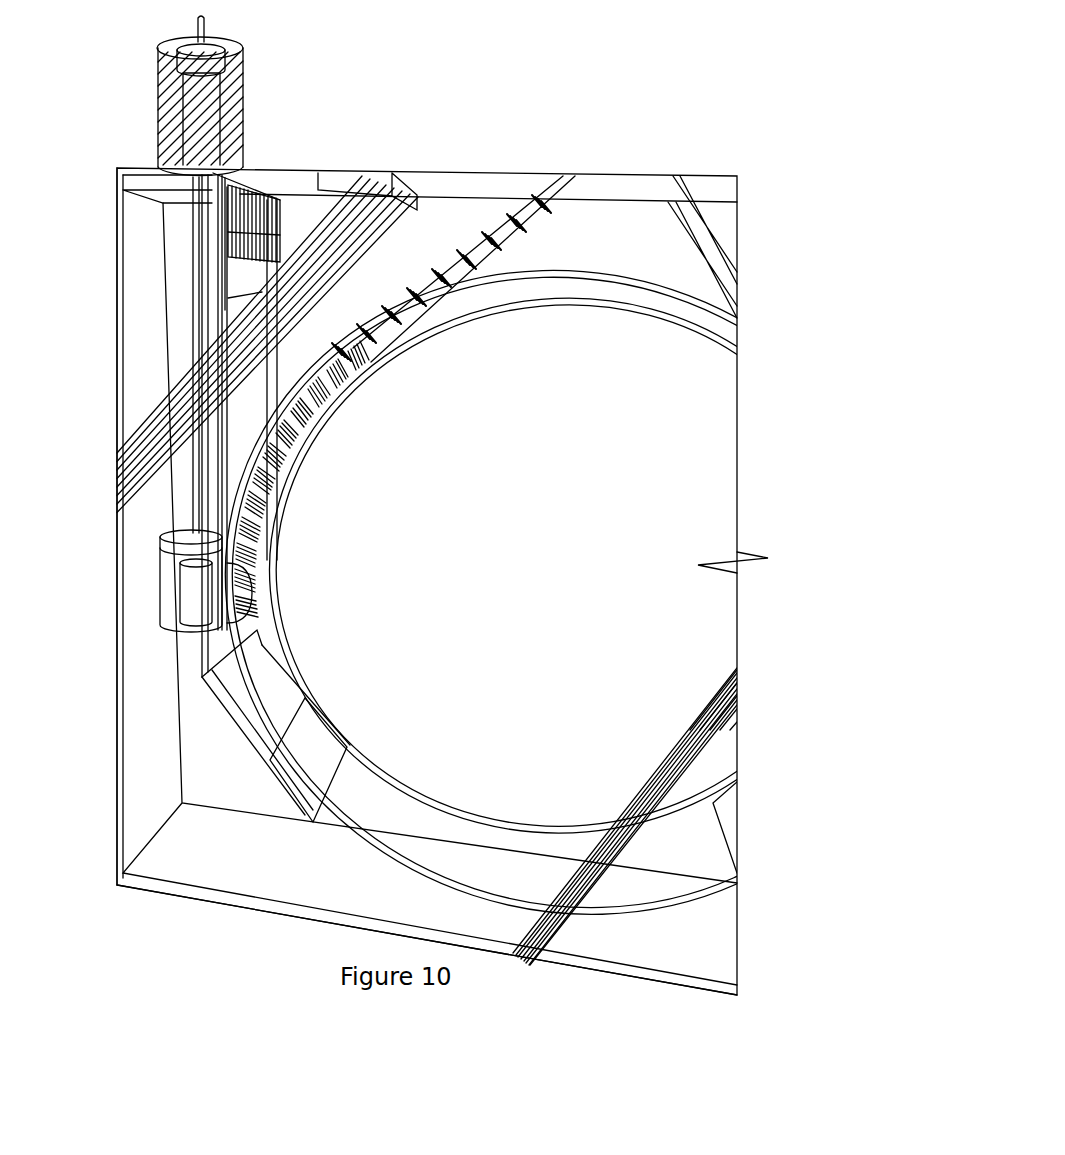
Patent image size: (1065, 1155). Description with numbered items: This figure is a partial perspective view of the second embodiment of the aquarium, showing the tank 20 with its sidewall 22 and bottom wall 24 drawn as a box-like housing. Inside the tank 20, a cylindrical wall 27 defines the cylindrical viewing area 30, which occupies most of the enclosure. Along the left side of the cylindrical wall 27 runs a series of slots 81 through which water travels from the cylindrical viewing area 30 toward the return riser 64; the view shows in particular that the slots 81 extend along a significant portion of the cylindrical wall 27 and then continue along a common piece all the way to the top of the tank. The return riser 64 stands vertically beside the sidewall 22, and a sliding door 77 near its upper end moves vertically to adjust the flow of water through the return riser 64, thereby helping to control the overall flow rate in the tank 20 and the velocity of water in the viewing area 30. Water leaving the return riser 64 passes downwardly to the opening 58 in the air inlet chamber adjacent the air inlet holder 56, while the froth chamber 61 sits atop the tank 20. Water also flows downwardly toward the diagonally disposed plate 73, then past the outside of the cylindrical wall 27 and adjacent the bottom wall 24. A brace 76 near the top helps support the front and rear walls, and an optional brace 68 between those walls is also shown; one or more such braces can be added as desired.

The tank 20 is at (645, 128).
The sidewall 22 is at (117, 710).
The bottom wall 24 is at (228, 898).
The cylindrical wall 27 is at (372, 785).
The cylindrical viewing area 30 is at (573, 556).
The air inlet holder 56 is at (190, 597).
The opening 58 is at (233, 591).
The froth chamber 61 is at (268, 88).
The return riser 64 is at (270, 350).
The brace 68 is at (282, 785).
The diagonally disposed plate 73 is at (292, 690).
The brace 76 is at (378, 193).
The sliding door 77 is at (272, 291).
The slots 81 is at (506, 233).